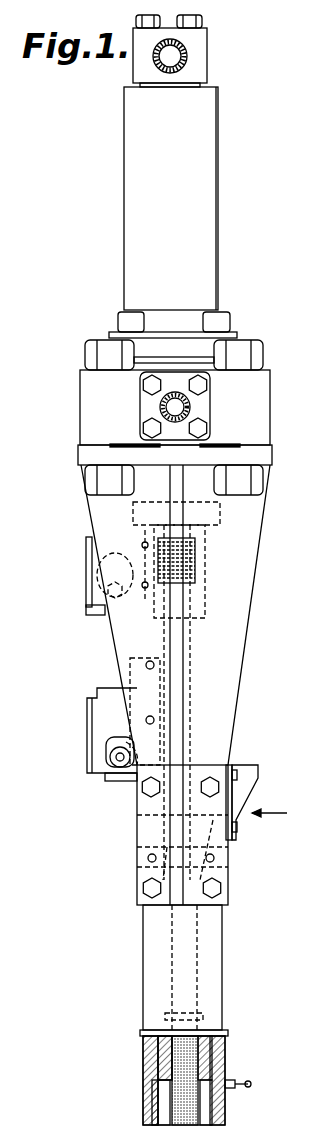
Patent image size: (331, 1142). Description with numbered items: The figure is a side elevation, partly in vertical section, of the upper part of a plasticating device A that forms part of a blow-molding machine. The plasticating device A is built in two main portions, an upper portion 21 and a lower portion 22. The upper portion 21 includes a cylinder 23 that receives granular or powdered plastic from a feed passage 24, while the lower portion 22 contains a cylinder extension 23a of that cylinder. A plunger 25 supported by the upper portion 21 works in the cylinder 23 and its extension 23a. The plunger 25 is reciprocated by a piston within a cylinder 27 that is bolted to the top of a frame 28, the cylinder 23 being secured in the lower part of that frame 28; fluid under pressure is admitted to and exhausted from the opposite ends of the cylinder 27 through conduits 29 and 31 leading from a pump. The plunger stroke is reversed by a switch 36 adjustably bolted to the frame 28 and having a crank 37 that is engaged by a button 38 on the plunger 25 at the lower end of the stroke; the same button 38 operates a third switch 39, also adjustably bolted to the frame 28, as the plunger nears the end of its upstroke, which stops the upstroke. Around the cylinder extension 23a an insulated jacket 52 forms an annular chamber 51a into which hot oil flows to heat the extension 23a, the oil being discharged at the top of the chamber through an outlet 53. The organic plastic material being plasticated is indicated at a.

The upper portion 21 is at (110, 840).
The lower portion 22 is at (240, 1032).
The cylinder 23 is at (187, 938).
The cylinder extension 23a is at (208, 1108).
The feed passage 24 is at (232, 822).
The plunger 25 is at (193, 688).
The cylinder 27 is at (210, 190).
The frame 28 is at (245, 541).
The conduit 29 is at (175, 53).
The conduit 31 is at (190, 408).
The switch 36 is at (98, 731).
The crank 37 is at (133, 763).
The button 38 is at (140, 540).
The third switch 39 is at (92, 570).
The annular chamber 51a is at (160, 1110).
The insulated jacket 52 is at (155, 1098).
The outlet 53 is at (232, 1086).
The plasticating device A is at (275, 817).
The organic plastic material a is at (183, 1060).